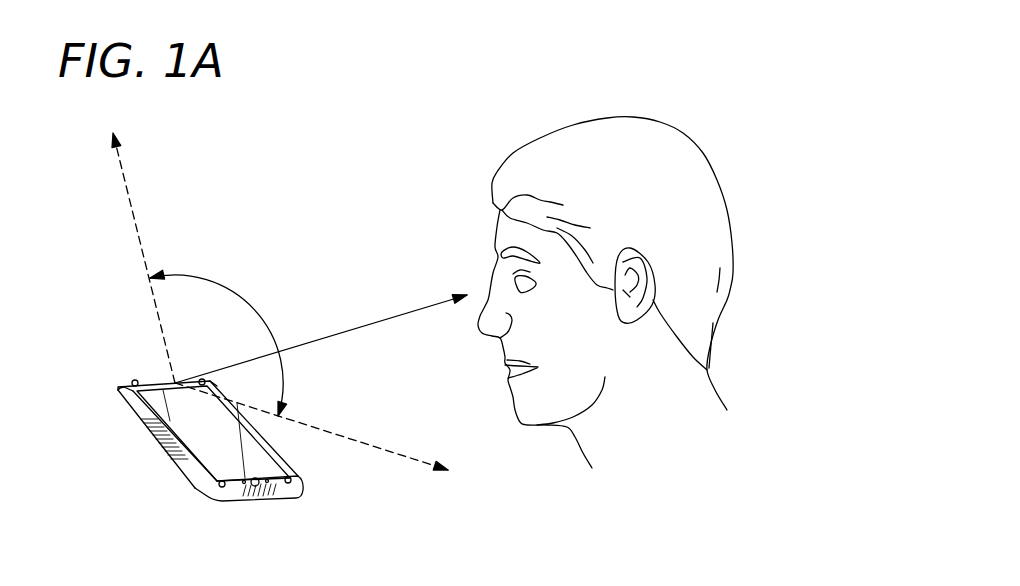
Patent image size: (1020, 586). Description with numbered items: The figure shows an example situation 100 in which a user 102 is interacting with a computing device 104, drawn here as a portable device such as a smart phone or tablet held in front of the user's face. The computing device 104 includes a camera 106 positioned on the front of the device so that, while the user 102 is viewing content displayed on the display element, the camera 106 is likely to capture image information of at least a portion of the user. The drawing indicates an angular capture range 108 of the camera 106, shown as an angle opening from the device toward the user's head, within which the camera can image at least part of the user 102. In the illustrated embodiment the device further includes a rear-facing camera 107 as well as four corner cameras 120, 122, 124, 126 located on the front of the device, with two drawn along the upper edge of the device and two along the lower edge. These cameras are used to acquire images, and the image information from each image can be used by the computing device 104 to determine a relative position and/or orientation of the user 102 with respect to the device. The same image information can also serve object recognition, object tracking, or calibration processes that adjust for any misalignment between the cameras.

The example situation 100 is at (711, 111).
The user 102 is at (460, 218).
The computing device 104 is at (118, 392).
The camera 106 is at (170, 383).
The rear-facing camera 107 is at (167, 382).
The angular capture range 108 is at (220, 284).
The corner camera 120 is at (131, 385).
The corner camera 122 is at (207, 383).
The corner camera 124 is at (222, 485).
The corner camera 126 is at (292, 480).